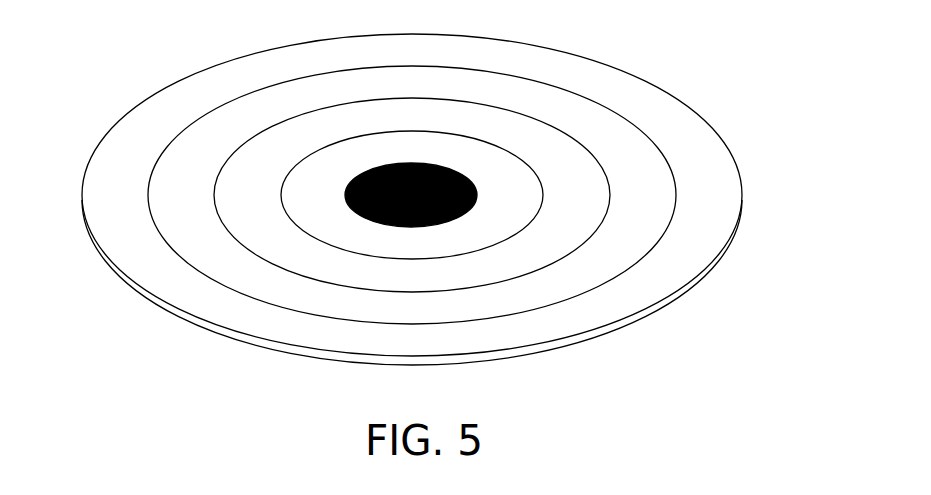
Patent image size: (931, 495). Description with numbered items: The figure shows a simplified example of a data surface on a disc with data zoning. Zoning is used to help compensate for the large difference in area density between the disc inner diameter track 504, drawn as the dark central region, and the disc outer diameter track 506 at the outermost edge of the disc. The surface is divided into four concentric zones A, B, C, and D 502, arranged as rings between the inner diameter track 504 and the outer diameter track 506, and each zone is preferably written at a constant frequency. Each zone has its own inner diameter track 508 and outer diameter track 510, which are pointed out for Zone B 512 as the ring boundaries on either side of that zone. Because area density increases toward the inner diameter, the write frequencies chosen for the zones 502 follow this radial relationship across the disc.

The zones 502 is at (333, 162).
The disc inner diameter track 504 is at (478, 190).
The disc outer diameter track 506 is at (743, 193).
The inner diameter track 508 is at (213, 198).
The outer diameter track 510 is at (148, 198).
The Zone B 512 is at (210, 252).